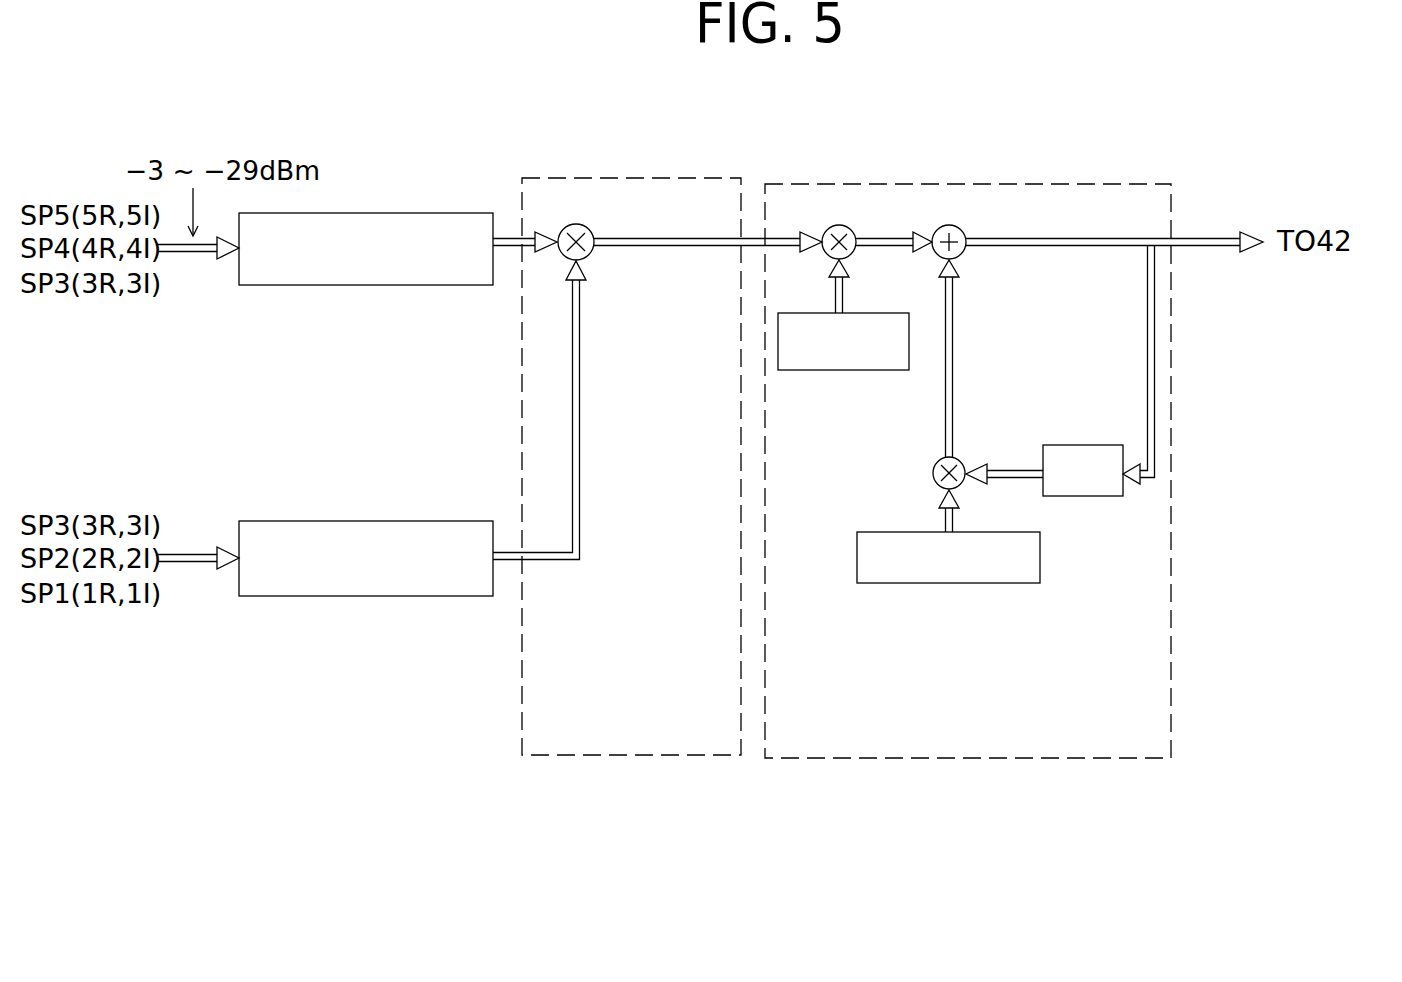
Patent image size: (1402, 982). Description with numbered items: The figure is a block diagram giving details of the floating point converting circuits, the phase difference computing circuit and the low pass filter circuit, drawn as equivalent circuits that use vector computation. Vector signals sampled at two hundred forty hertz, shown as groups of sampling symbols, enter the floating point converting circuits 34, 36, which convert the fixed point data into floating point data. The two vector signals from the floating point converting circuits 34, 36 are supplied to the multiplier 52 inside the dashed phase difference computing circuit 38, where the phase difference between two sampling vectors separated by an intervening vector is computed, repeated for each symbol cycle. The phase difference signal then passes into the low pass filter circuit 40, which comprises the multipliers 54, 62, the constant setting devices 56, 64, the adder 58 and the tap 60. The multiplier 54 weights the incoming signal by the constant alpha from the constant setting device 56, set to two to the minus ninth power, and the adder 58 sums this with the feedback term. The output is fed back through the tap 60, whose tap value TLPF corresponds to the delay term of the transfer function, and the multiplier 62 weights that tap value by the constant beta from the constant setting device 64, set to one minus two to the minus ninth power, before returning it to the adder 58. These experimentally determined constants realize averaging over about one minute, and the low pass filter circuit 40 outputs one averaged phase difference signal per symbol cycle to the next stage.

The floating point converting circuit 34 is at (438, 521).
The floating point converting circuit 36 is at (438, 213).
The phase difference computing circuit 38 is at (582, 178).
The low pass filter circuit 40 is at (1040, 184).
The multiplier 52 is at (586, 259).
The multiplier 54 is at (835, 225).
The constant setting device 56 is at (847, 370).
The adder 58 is at (948, 225).
The tap 60 is at (1080, 496).
The multiplier 62 is at (934, 465).
The constant setting device 64 is at (980, 583).